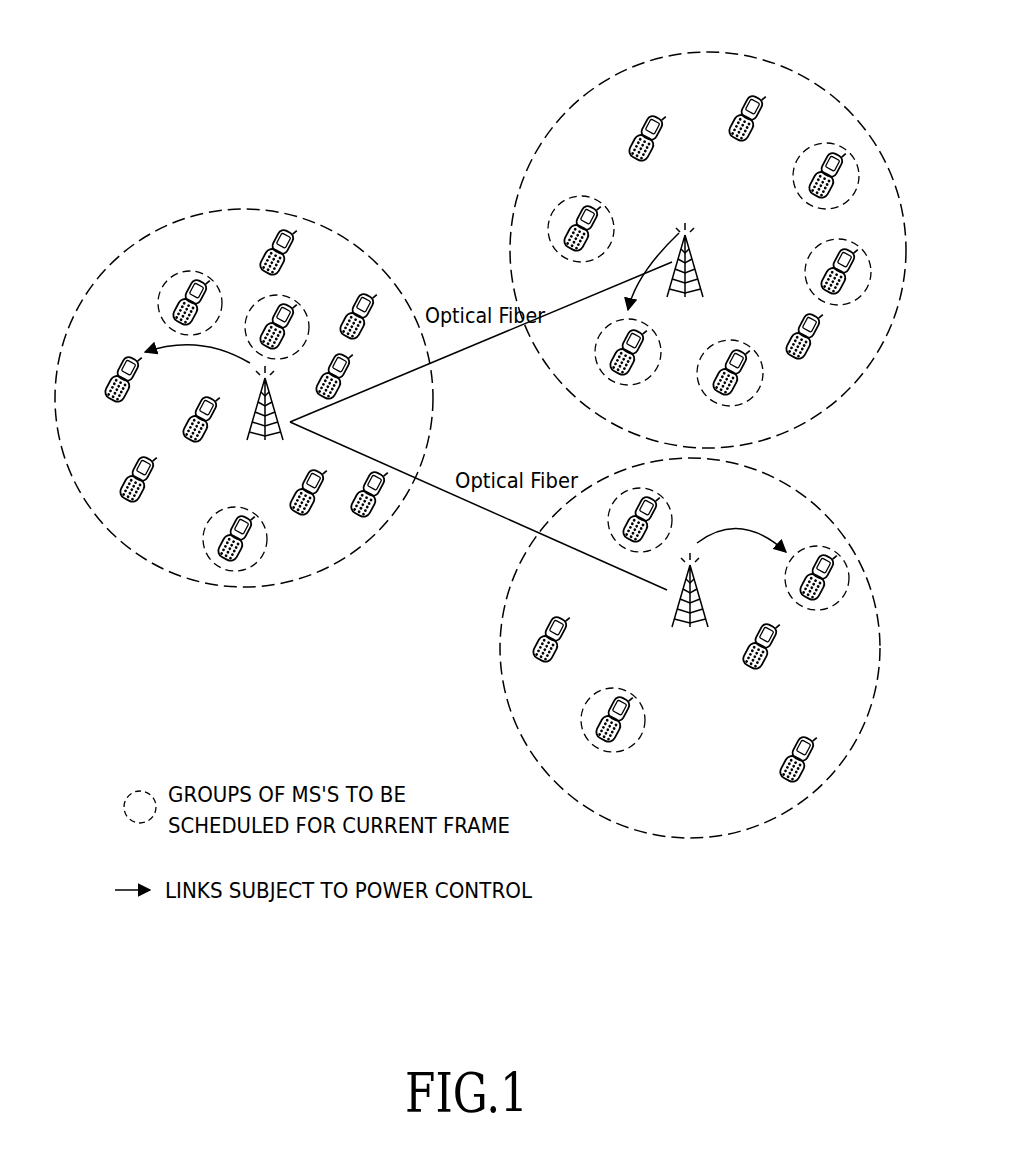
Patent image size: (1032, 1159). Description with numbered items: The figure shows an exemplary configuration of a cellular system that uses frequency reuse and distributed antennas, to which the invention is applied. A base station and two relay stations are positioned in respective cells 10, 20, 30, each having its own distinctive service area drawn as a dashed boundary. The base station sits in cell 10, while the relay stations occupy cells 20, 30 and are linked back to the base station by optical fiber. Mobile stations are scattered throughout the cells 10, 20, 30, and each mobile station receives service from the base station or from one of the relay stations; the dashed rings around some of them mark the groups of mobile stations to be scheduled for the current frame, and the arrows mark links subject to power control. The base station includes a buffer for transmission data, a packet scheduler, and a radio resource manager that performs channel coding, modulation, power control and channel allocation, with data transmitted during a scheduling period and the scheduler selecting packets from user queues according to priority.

The cell 10 is at (247, 208).
The cell 20 is at (710, 53).
The cell 30 is at (798, 490).